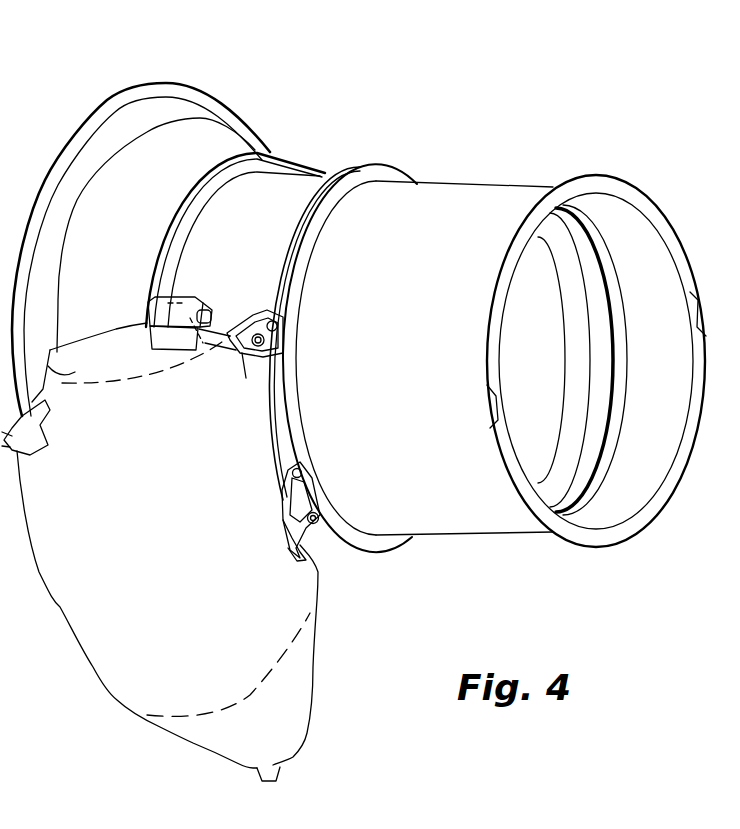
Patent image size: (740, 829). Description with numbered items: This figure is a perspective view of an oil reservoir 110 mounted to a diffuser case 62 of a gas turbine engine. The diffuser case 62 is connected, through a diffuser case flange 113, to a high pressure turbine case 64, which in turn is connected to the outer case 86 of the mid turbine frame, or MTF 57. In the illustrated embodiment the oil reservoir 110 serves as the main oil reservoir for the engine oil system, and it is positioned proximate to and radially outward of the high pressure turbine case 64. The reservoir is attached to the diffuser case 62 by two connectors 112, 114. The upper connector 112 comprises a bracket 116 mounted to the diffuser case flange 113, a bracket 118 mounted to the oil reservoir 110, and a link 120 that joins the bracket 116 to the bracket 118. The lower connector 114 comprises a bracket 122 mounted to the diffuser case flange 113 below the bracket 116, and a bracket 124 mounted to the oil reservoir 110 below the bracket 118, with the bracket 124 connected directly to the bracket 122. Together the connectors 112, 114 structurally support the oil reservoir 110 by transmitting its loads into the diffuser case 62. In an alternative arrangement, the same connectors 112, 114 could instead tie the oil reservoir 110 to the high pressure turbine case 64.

The MTF 57 is at (155, 72).
The outer case 86 is at (123, 130).
The high pressure turbine case 64 is at (326, 170).
The diffuser case flange 113 is at (398, 165).
The diffuser case 62 is at (494, 185).
The oil reservoir 110 is at (132, 668).
The link 120 is at (242, 330).
The bracket 118 is at (237, 360).
The connector 112 is at (249, 306).
The bracket 116 is at (285, 322).
The connector 114 is at (280, 498).
The bracket 122 is at (297, 497).
The bracket 124 is at (292, 520).